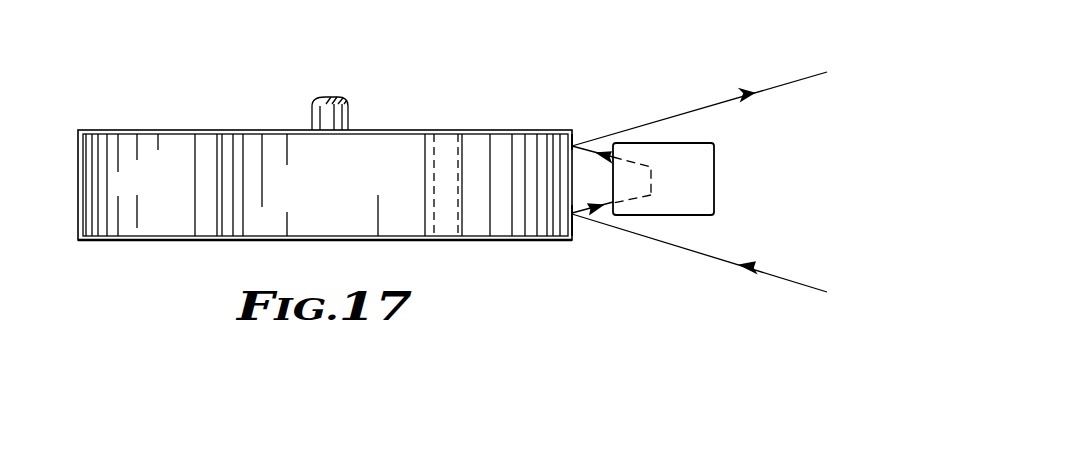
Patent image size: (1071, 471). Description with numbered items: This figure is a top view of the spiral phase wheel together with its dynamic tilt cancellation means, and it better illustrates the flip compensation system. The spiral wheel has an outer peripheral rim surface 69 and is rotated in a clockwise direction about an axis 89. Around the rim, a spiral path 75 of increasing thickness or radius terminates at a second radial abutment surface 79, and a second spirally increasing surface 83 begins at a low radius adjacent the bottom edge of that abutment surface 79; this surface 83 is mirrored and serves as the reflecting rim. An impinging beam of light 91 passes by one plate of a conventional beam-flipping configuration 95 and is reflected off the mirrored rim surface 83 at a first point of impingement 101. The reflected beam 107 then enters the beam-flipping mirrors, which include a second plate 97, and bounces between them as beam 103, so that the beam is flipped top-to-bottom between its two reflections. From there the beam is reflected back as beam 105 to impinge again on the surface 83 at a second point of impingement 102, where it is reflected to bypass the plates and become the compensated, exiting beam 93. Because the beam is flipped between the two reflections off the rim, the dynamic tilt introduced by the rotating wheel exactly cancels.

The outer peripheral rim surface 69 is at (61, 175).
The spiral path 75 is at (140, 185).
The second radial abutment surface 79 is at (218, 156).
The spirally increasing surface 83 is at (325, 185).
The axis 89 is at (348, 114).
The impinging beam of light 91 is at (822, 252).
The compensated reflected beam 93 is at (775, 83).
The beam-flipping configuration 95 is at (702, 176).
The second plate 97 is at (663, 179).
The spot 101 is at (576, 219).
The point 102 is at (575, 142).
The beam 103 is at (662, 172).
The beam 105 is at (610, 152).
The reflected beam 107 is at (637, 197).